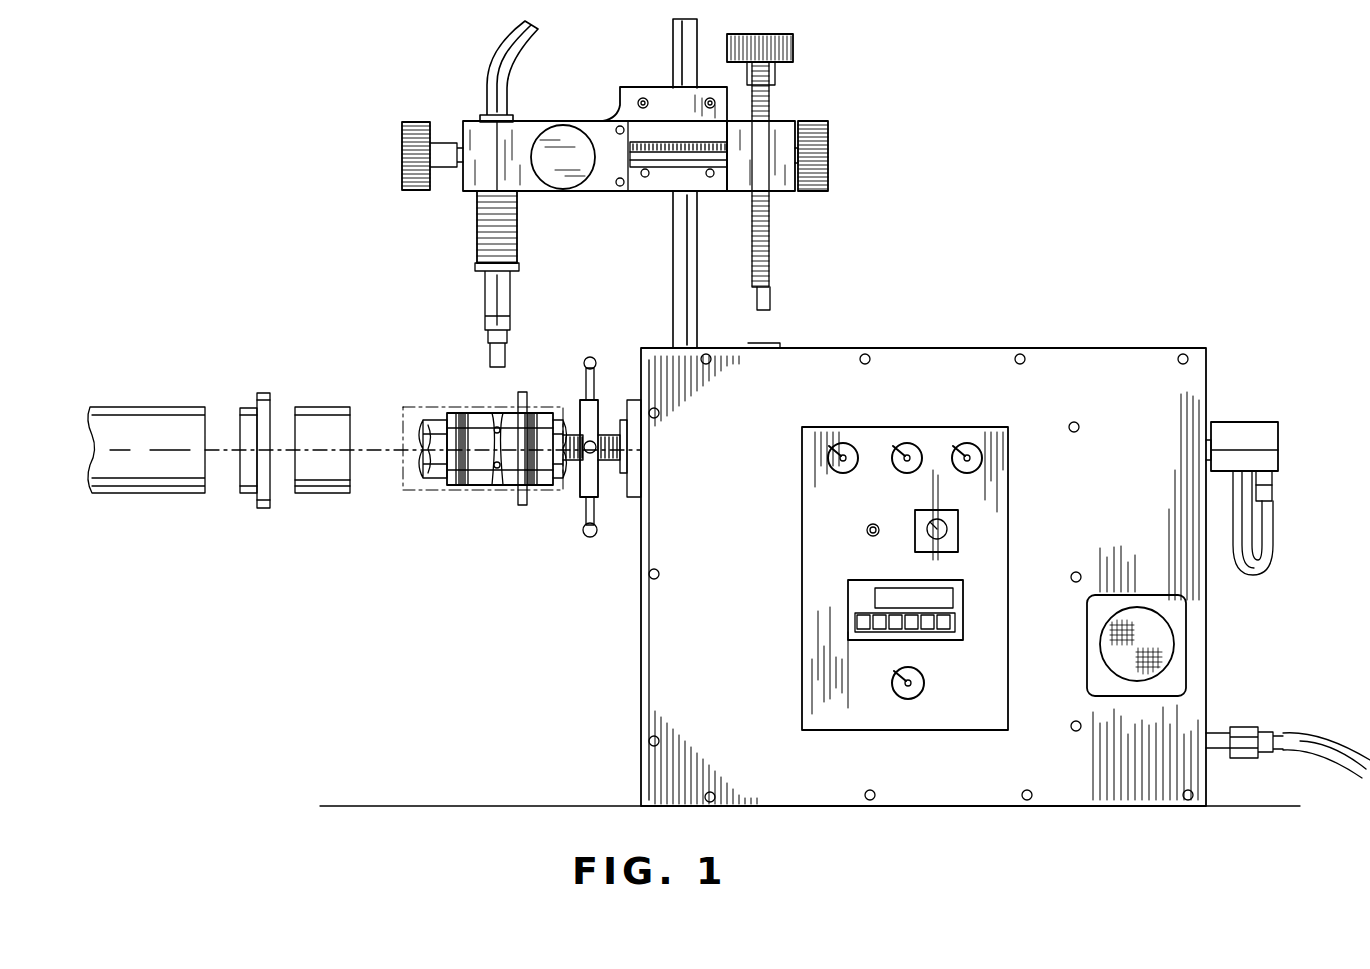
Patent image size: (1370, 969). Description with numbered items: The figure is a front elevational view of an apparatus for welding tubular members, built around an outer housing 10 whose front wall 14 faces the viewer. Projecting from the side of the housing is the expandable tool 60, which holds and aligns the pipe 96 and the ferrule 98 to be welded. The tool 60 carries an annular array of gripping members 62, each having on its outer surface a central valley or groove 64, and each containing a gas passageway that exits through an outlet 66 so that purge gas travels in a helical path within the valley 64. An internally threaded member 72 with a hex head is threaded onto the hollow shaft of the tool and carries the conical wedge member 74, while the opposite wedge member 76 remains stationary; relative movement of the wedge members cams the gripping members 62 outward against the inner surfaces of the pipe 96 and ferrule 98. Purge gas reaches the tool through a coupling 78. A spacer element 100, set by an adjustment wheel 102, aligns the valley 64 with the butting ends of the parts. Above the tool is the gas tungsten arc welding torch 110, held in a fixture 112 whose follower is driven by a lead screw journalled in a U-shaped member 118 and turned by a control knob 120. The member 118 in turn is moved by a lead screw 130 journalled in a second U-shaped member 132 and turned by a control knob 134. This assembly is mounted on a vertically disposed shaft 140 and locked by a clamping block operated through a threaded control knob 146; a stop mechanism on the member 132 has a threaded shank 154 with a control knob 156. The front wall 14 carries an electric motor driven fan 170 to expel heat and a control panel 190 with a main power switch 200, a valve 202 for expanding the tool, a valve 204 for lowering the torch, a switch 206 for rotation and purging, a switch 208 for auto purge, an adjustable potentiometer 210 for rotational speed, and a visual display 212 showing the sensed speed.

The outer housing 10 is at (1222, 647).
The front wall 14 is at (664, 660).
The expandable tool 60 is at (459, 449).
The gripping members 62 is at (475, 487).
The central valley or groove 64 is at (502, 408).
The outlet 66 is at (502, 487).
The internally threaded member 72 is at (424, 438).
The conical wedge member 74 is at (440, 478).
The wedge member 76 is at (557, 487).
The coupling 78 is at (1245, 425).
The pipe 96 is at (148, 407).
The ferrule 98 is at (250, 408).
The spacer element 100 is at (320, 408).
The adjustment wheel 102 is at (598, 498).
The torch 110 is at (472, 276).
The fixture 112 is at (475, 133).
The U-shaped member 118 is at (600, 183).
The control knob 120 is at (563, 190).
The lead screw 130 is at (695, 170).
The U-shaped member 132 is at (660, 97).
The control knob 134 is at (412, 125).
The vertically disposed reciprocally mounted shaft 140 is at (683, 255).
The threaded control knob 146 is at (828, 128).
The threaded shank 154 is at (770, 252).
The control knob 156 is at (795, 50).
The electric motor driven fan 170 is at (1135, 610).
The control panel 190 is at (818, 695).
The main power switch 200 is at (867, 530).
The valve 202 is at (830, 462).
The valve 204 is at (905, 450).
The switch 206 is at (965, 455).
The switch 208 is at (902, 698).
The adjustable potentiometer 210 is at (955, 530).
The visual display 212 is at (855, 602).